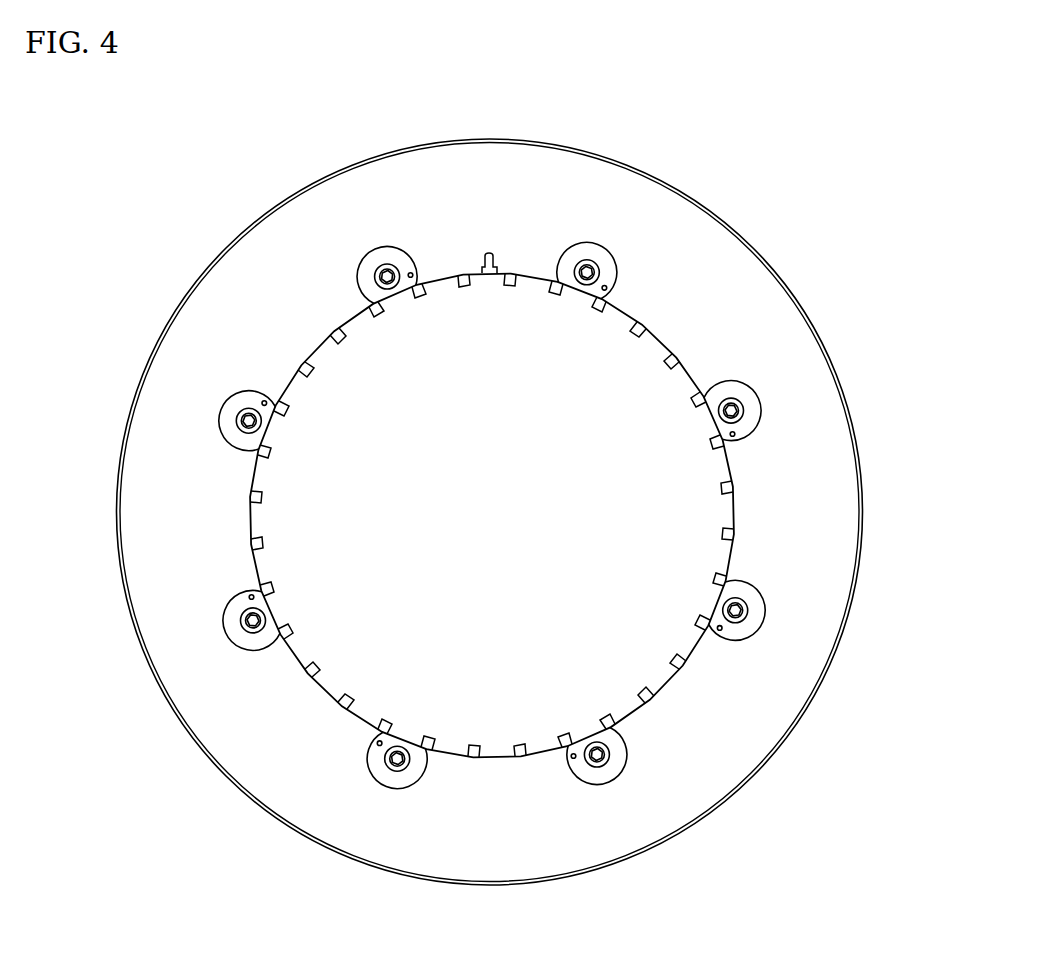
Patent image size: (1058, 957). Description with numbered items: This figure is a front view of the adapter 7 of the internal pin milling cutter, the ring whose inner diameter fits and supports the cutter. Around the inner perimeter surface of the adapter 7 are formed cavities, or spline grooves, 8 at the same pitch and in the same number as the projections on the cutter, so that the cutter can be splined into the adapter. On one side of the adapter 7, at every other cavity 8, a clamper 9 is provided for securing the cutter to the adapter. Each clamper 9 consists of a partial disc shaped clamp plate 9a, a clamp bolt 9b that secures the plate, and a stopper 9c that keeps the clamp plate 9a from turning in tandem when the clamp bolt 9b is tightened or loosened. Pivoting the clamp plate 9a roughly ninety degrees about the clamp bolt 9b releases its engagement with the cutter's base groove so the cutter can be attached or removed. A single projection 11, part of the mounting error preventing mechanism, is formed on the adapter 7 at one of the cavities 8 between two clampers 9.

The adapter 7 is at (782, 271).
The cavities (spline grooves) 8 is at (650, 332).
The clampers 9 is at (567, 455).
The partial disc shaped clamp plate 9a is at (591, 249).
The clamp bolt 9b is at (589, 270).
The stopper 9c is at (607, 287).
The projection 11 is at (490, 273).